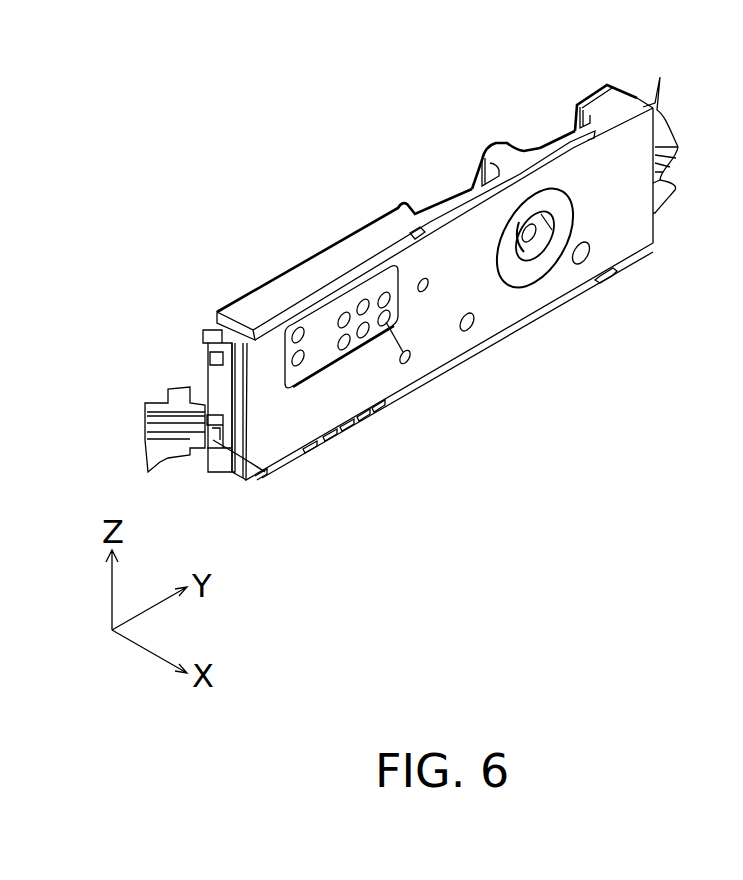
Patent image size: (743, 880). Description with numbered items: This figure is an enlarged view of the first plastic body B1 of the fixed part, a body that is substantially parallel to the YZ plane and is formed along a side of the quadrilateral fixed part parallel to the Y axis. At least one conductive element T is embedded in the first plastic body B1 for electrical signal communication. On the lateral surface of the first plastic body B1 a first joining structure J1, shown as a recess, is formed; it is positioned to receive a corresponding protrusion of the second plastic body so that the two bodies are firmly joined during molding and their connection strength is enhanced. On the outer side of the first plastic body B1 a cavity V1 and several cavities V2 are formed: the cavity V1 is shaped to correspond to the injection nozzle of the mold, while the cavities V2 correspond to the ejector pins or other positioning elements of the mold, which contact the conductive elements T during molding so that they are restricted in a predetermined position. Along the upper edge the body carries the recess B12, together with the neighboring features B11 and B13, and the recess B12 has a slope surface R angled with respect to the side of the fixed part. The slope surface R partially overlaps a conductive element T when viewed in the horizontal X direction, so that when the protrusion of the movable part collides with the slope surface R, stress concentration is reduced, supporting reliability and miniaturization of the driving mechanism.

The first plastic body B1 is at (321, 258).
The first bending tab B11 is at (477, 190).
The recess B12 is at (563, 140).
The third bending tab B13 is at (417, 231).
The slope surface R is at (573, 128).
The cavity V1 is at (530, 235).
The cavities V2 is at (365, 333).
The first joining structure J1 is at (217, 367).
The conductive element T is at (185, 405).